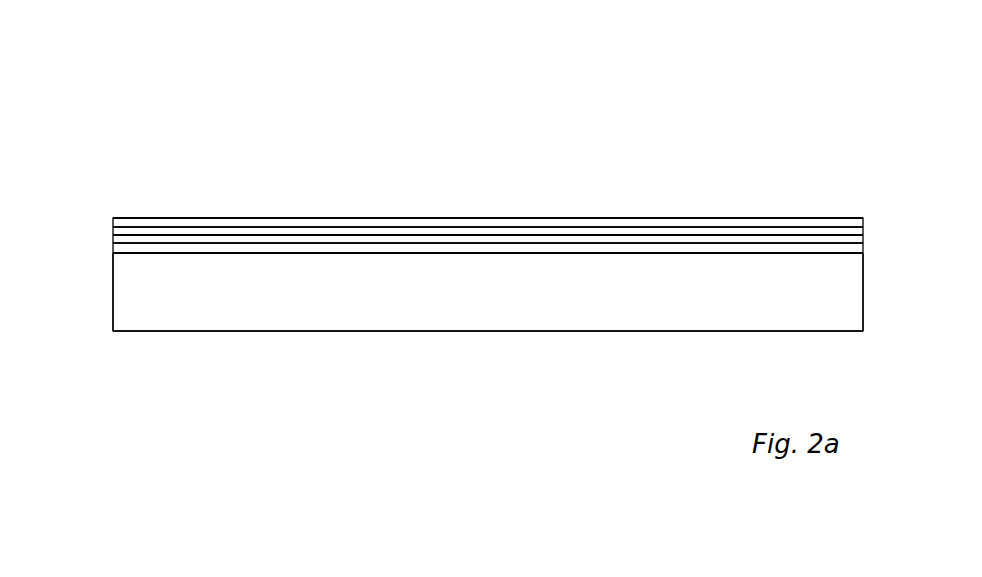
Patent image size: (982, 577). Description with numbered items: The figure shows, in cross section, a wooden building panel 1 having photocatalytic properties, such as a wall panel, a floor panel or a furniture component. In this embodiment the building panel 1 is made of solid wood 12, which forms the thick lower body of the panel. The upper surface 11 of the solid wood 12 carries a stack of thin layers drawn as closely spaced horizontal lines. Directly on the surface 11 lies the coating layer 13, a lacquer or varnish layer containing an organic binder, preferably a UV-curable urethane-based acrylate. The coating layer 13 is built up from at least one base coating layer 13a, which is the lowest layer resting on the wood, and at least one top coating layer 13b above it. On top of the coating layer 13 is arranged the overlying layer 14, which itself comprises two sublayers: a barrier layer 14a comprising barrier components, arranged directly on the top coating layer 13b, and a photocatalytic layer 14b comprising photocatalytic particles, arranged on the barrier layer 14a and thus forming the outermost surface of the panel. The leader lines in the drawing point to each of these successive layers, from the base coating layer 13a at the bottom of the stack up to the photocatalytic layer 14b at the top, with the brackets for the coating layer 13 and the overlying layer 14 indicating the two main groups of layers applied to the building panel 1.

The building panel 1 is at (153, 168).
The surface 11 is at (612, 257).
The solid wood 12 is at (417, 302).
The coating layer 13 is at (280, 234).
The base coating layer 13a is at (733, 250).
The top coating layer 13b is at (622, 240).
The overlying layer 14 is at (380, 212).
The barrier layer 14a is at (527, 230).
The photocatalytic layer 14b is at (457, 220).